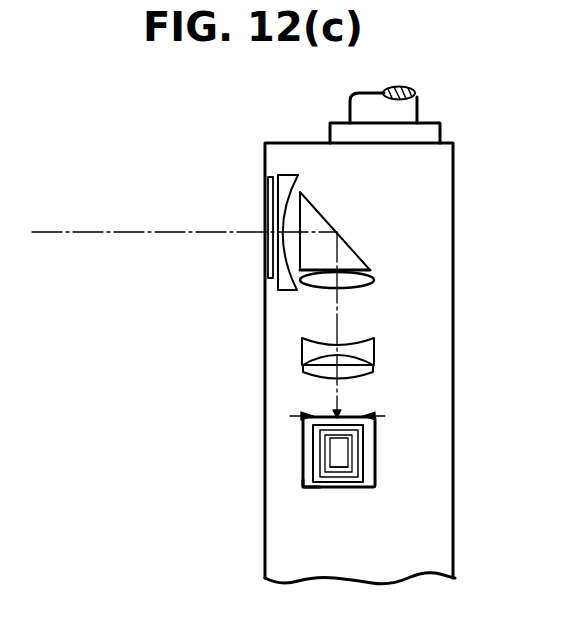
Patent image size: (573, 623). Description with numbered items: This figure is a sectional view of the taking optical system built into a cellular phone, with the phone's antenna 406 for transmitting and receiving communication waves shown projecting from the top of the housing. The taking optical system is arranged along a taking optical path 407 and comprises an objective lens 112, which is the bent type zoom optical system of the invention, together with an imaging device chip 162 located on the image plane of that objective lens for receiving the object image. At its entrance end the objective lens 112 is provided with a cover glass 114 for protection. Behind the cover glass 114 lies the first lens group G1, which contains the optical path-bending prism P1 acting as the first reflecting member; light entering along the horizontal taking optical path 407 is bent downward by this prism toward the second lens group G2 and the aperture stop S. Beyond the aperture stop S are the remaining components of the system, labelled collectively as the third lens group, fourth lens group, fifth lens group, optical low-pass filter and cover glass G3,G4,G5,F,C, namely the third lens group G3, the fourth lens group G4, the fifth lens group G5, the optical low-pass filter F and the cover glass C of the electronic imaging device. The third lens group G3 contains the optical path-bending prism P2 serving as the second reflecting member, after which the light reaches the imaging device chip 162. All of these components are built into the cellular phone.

The objective lens 112 is at (243, 375).
The antenna 406 is at (418, 108).
The taking optical path 407 is at (77, 232).
The cover glass 114 is at (267, 203).
The first lens group G1 is at (257, 283).
The optical path-bending prism P1 is at (315, 221).
The second lens group G2 is at (280, 350).
The aperture stop S is at (300, 416).
The third lens group, fourth lens group, fifth lens group, optical low-pass filter a G3,G4,G5,F,C is at (204, 452).
The third lens group G3 is at (339, 452).
The fourth lens group G4 is at (338, 453).
The fifth lens group G5 is at (339, 453).
The optical low-pass filter F is at (338, 453).
The cover glass of electronic imaging device C is at (339, 452).
The optical path-bending prism P2 is at (308, 488).
The imaging device chip 162 is at (343, 488).